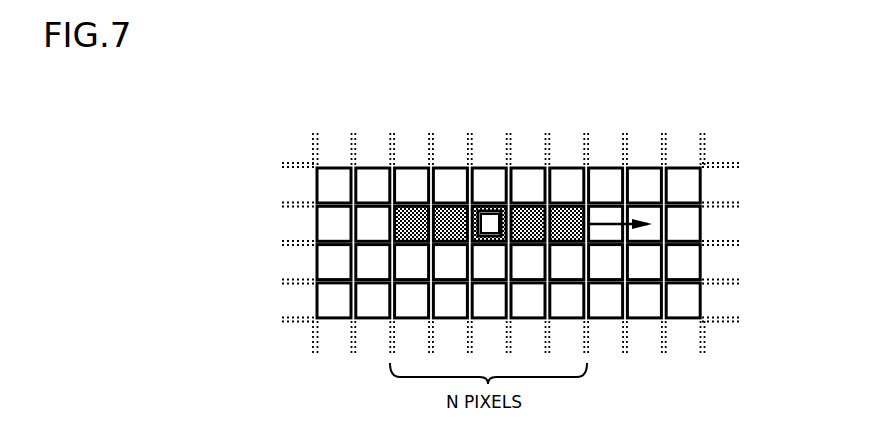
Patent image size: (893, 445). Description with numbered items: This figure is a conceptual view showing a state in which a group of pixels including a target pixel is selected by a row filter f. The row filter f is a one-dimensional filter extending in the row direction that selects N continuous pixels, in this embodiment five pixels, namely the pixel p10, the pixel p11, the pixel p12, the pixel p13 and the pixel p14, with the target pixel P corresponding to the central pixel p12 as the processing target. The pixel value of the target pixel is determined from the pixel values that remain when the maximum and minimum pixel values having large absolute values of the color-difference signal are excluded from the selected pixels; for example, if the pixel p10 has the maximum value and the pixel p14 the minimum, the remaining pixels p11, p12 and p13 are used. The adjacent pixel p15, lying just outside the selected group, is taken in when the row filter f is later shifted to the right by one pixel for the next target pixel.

The pixel p10 is at (410, 203).
The pixel p11 is at (448, 203).
The target pixel p12 is at (489, 203).
The pixel p13 is at (527, 203).
The pixel p14 is at (565, 203).
The pixel p15 is at (605, 217).
The row filter f is at (394, 221).